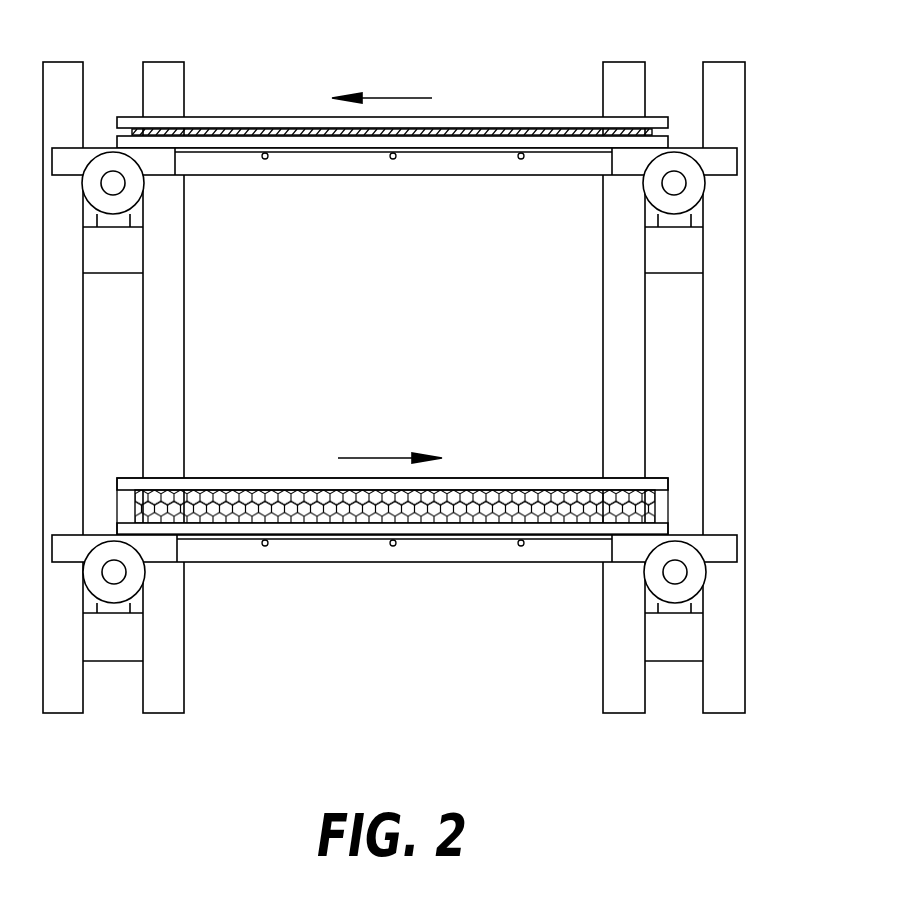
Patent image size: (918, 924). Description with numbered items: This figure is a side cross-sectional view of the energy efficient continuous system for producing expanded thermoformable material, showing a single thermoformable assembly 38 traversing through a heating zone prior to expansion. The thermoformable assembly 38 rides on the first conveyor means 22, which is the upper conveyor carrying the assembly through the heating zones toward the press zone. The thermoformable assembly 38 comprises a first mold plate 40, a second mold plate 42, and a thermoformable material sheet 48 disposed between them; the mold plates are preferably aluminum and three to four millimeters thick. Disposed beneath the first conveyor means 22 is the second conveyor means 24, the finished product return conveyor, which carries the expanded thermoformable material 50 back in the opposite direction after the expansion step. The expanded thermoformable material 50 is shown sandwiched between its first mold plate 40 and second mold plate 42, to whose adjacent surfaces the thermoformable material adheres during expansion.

The first conveyor means 22 is at (728, 158).
The second conveyor means 24 is at (738, 545).
The thermoformable assembly 38 is at (392, 325).
The first mold plate 40 is at (270, 123).
The second mold plate 42 is at (245, 142).
The thermoformable material sheet 48 is at (228, 133).
The expanded thermoformable material 50 is at (513, 457).